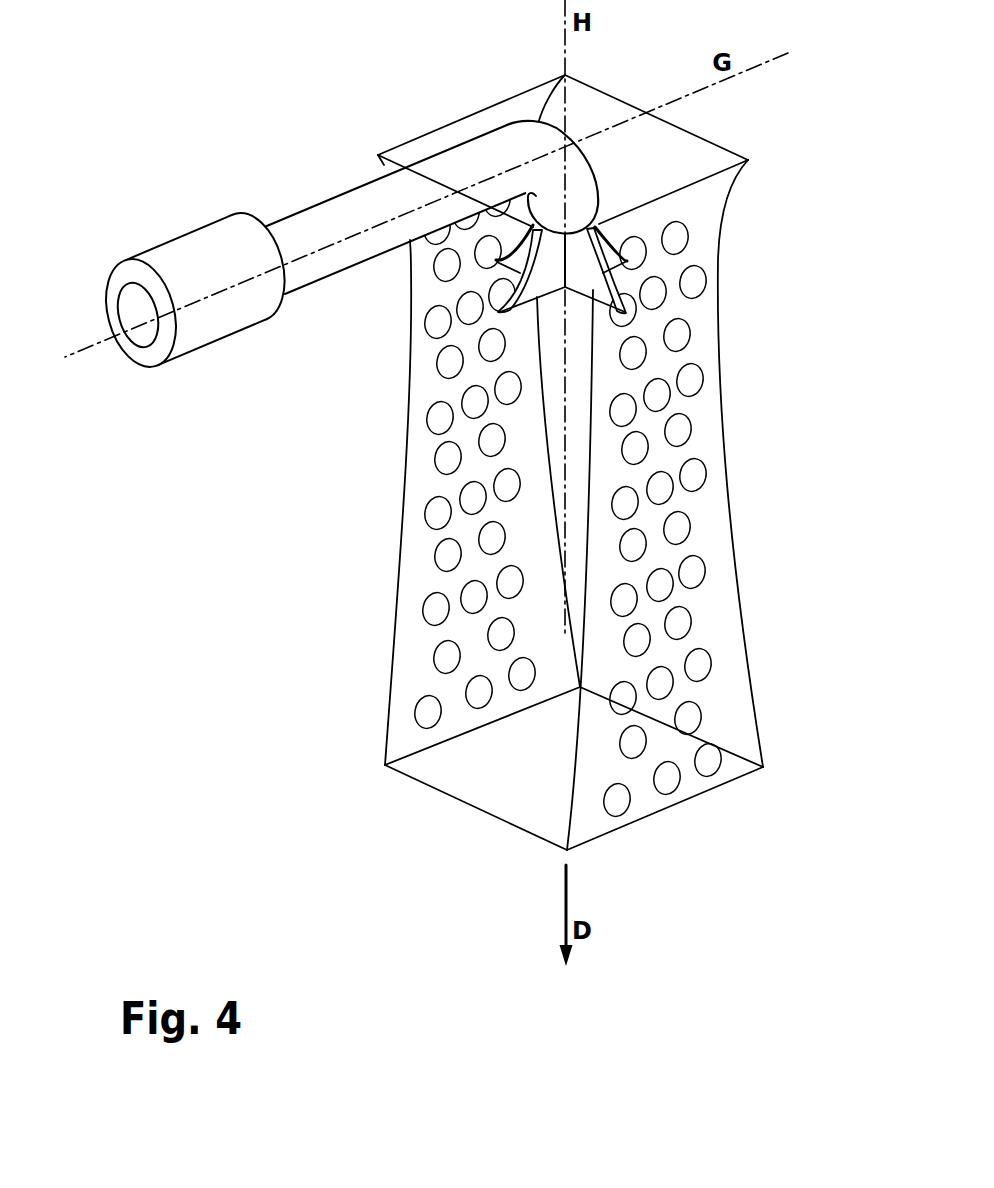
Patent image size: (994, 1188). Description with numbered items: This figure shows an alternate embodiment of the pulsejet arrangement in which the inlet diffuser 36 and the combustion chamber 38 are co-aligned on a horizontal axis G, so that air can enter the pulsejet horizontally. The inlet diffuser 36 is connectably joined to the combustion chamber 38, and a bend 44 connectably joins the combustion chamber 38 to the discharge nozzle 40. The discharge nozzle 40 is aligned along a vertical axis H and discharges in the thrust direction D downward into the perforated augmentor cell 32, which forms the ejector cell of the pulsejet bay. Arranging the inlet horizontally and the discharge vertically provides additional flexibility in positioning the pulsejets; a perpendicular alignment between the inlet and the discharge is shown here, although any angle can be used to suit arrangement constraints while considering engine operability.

The augmentor cell 32 is at (410, 471).
The inlet diffuser 36 is at (210, 325).
The combustion chamber 38 is at (330, 267).
The discharge nozzle 40 is at (563, 289).
The bend 44 is at (592, 190).